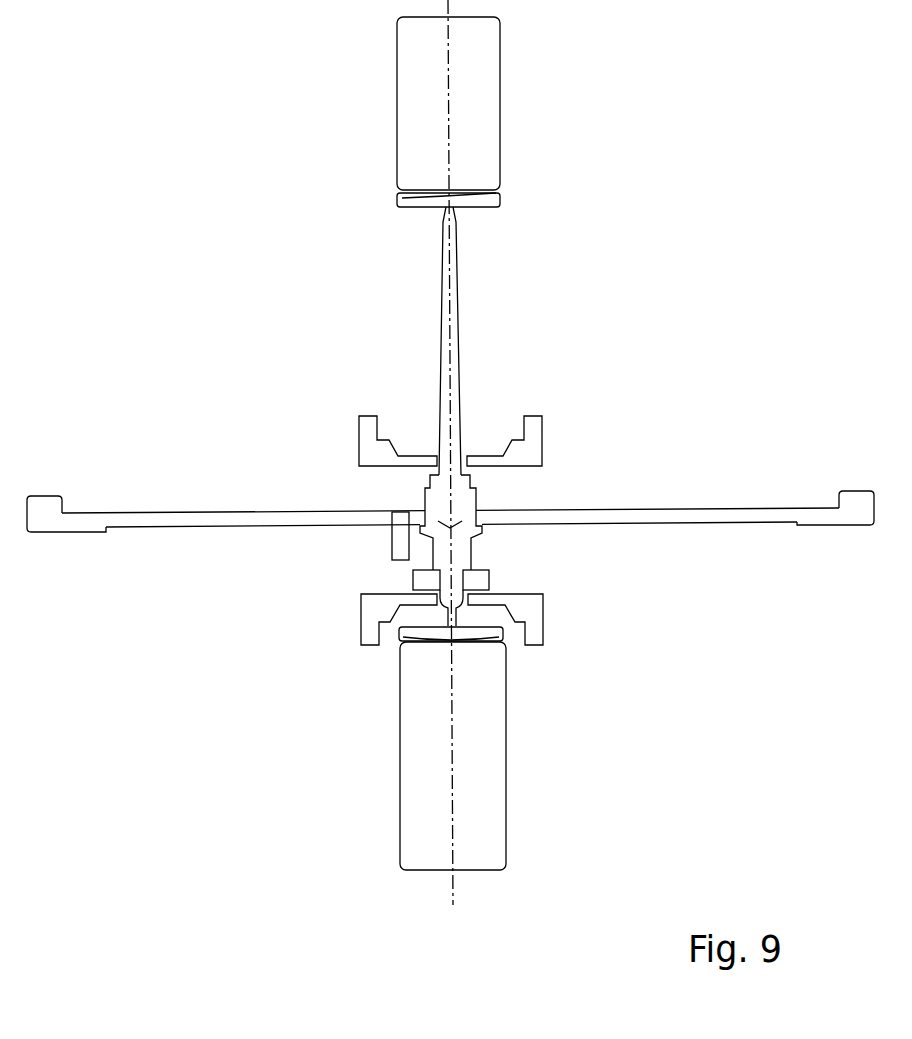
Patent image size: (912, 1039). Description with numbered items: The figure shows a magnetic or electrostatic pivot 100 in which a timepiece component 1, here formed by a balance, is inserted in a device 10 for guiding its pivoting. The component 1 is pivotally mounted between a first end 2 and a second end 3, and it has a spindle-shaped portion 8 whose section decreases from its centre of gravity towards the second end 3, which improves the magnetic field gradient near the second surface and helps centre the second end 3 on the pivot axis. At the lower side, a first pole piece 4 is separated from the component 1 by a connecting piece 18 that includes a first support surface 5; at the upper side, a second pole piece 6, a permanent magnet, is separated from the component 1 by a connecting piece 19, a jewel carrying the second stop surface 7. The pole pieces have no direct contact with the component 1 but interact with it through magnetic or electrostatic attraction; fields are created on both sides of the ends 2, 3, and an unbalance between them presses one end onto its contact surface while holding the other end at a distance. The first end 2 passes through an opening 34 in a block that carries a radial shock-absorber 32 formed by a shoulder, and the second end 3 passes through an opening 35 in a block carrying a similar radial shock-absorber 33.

The magnetic or electrostatic pivot 100 is at (707, 124).
The second pole piece 6 is at (485, 117).
The connecting piece (jewel) 19 is at (494, 204).
The second end 3 is at (444, 204).
The second stop surface 7 is at (480, 218).
The device for guiding the pivoting 10 is at (415, 256).
The spindle-shaped portion 8 is at (454, 333).
The radial shock-absorber 33 is at (532, 447).
The opening 35 is at (434, 464).
The component 1 is at (464, 498).
The radial shock-absorber 32 is at (532, 597).
The first support surface 5 is at (500, 614).
The opening 34 is at (430, 598).
The first end 2 is at (446, 637).
The connecting piece 18 is at (487, 641).
The first pole piece 4 is at (482, 752).